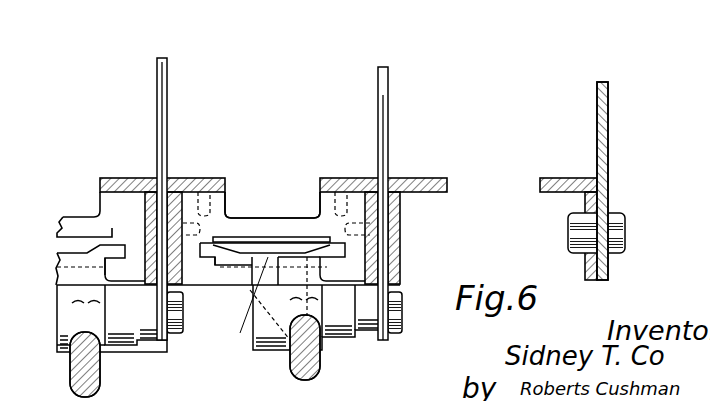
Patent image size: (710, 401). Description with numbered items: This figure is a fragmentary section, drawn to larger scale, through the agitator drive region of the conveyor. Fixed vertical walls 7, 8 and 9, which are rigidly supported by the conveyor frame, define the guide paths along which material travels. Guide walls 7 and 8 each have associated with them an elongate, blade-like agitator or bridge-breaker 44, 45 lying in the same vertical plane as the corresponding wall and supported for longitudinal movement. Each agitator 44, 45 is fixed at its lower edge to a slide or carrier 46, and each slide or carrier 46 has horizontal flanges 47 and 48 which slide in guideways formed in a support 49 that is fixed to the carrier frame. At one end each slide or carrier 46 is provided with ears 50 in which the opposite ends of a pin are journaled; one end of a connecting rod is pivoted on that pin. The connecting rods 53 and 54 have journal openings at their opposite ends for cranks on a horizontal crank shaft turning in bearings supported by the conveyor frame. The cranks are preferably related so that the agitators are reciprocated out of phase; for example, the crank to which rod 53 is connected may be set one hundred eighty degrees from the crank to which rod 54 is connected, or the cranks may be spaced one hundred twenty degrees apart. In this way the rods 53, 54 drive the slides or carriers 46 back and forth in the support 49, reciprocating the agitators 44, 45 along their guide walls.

The fixed vertical wall 7 is at (157, 63).
The fixed vertical wall 8 is at (380, 80).
The fixed vertical wall 9 is at (608, 100).
The agitator or bridge-breaker 44 is at (160, 115).
The agitator or bridge-breaker 45 is at (380, 128).
The slide or carrier 46 is at (178, 312).
The horizontal flange 47 is at (214, 258).
The horizontal flange 48 is at (118, 237).
The support 49 is at (63, 218).
The ear 50 is at (252, 257).
The connecting rod 53 is at (90, 368).
The connecting rod 54 is at (292, 368).